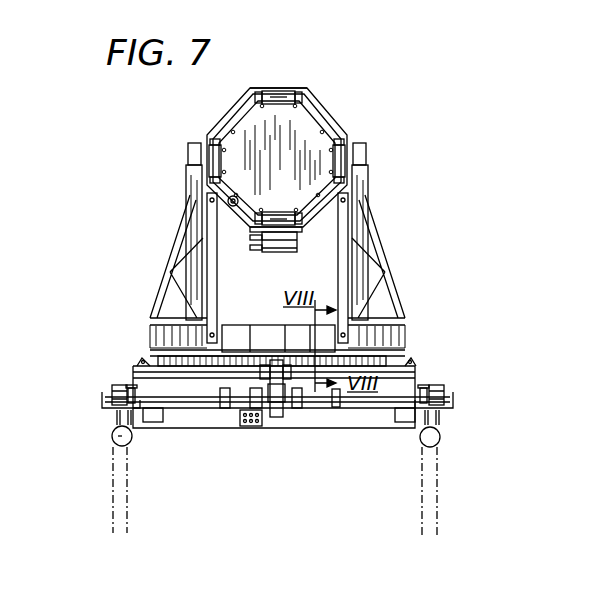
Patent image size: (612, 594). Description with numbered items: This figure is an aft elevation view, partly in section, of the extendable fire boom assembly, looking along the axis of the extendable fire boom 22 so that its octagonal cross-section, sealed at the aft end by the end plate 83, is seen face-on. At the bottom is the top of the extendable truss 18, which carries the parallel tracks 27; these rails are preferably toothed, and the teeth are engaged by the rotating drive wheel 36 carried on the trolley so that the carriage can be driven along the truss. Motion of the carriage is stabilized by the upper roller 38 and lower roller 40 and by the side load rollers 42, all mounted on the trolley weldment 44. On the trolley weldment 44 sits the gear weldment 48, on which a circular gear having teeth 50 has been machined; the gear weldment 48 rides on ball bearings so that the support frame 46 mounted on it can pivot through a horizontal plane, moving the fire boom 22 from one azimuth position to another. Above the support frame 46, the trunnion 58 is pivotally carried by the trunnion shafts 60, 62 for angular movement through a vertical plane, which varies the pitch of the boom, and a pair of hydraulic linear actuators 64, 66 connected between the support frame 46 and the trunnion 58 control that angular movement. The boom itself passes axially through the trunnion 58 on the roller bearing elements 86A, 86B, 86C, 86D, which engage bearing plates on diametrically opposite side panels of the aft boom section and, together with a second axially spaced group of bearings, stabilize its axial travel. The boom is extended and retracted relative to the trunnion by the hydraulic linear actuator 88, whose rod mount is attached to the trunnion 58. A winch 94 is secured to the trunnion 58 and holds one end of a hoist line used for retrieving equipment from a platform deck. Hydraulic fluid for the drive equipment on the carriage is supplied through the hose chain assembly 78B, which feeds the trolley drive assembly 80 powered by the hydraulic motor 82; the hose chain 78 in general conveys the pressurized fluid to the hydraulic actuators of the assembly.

The extendable truss 18 is at (440, 507).
The extendable fire boom 22 is at (247, 127).
The parallel tracks 27 is at (104, 409).
The rotating drive wheel 36 is at (132, 387).
The upper roller 38 is at (113, 390).
The lower roller 40 is at (135, 428).
The side load rollers 42 is at (153, 422).
The trolley weldment 44 is at (400, 356).
The support frame 46 is at (396, 300).
The gear weldment 48 is at (262, 352).
The gear teeth 50 is at (205, 368).
The trunnion 58 is at (254, 88).
The trunnion shaft 60 is at (368, 155).
The trunnion shaft 62 is at (188, 153).
The hydraulic linear actuator 64 is at (348, 235).
The hydraulic linear actuator 66 is at (212, 235).
The shaft 78 is at (444, 390).
The hose chain assembly 78B is at (270, 418).
The trolley drive assembly 80 is at (285, 418).
The hydraulic motor 82 is at (248, 426).
The end plate 83 is at (300, 128).
The roller bearing element 86A is at (283, 97).
The roller bearing element 86B is at (342, 160).
The roller bearing element 86C is at (276, 215).
The roller bearing element 86D is at (215, 158).
The hydraulic linear actuator 88 is at (237, 208).
The winch 94 is at (284, 243).